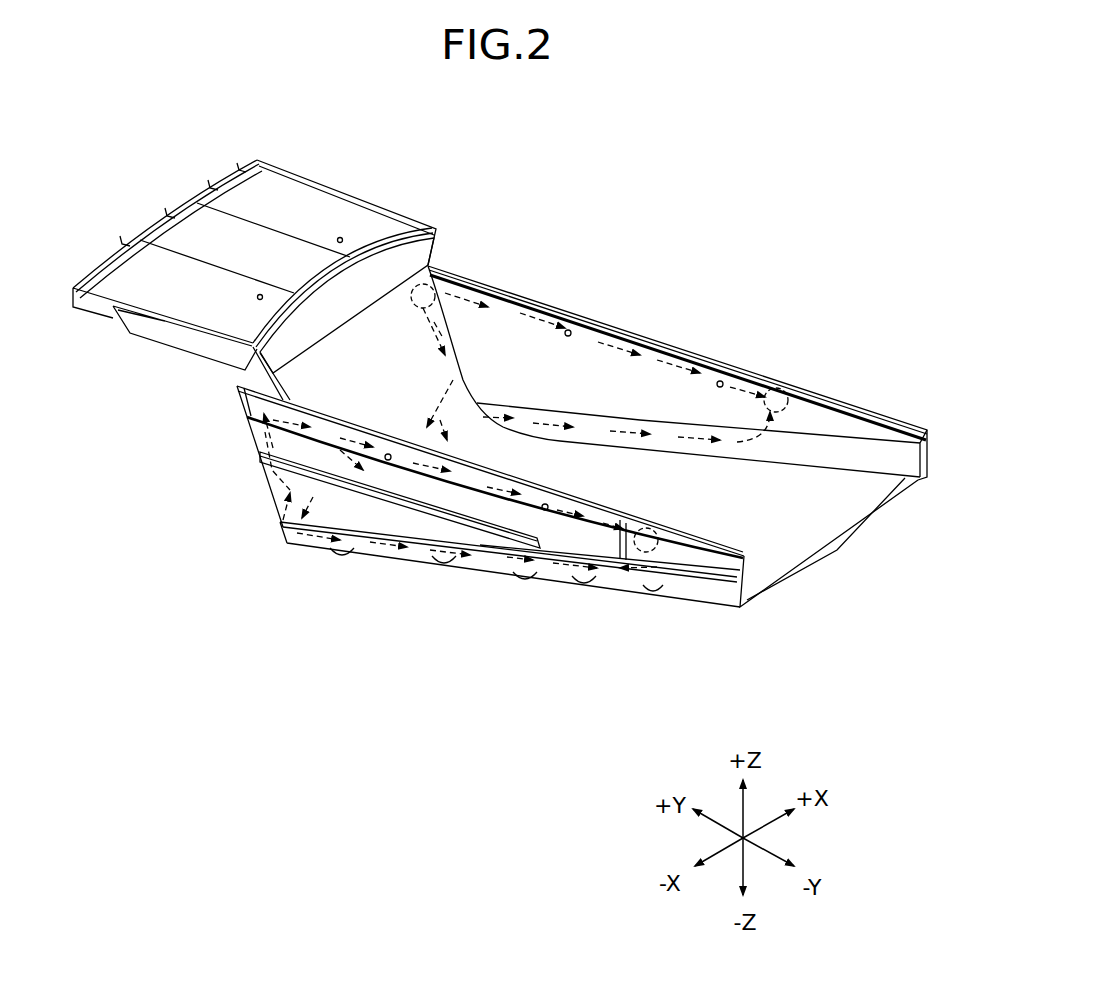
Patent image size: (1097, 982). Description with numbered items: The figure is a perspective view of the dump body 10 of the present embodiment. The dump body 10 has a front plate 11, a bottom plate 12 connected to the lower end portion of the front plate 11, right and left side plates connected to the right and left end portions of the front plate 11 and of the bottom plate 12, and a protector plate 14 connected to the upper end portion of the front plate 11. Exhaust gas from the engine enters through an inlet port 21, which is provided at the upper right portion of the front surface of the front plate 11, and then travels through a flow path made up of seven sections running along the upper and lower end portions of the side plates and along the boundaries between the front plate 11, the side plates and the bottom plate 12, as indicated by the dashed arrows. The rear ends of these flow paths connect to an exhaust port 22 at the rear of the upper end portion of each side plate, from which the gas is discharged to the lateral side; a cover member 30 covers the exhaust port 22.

The dump body 10 is at (618, 250).
The front plate 11 is at (386, 320).
The bottom plate 12 is at (590, 487).
The protector plate 14 is at (192, 222).
The inlet port 21 is at (425, 282).
The exhaust port 22 is at (792, 386).
The cover member 30 is at (640, 543).